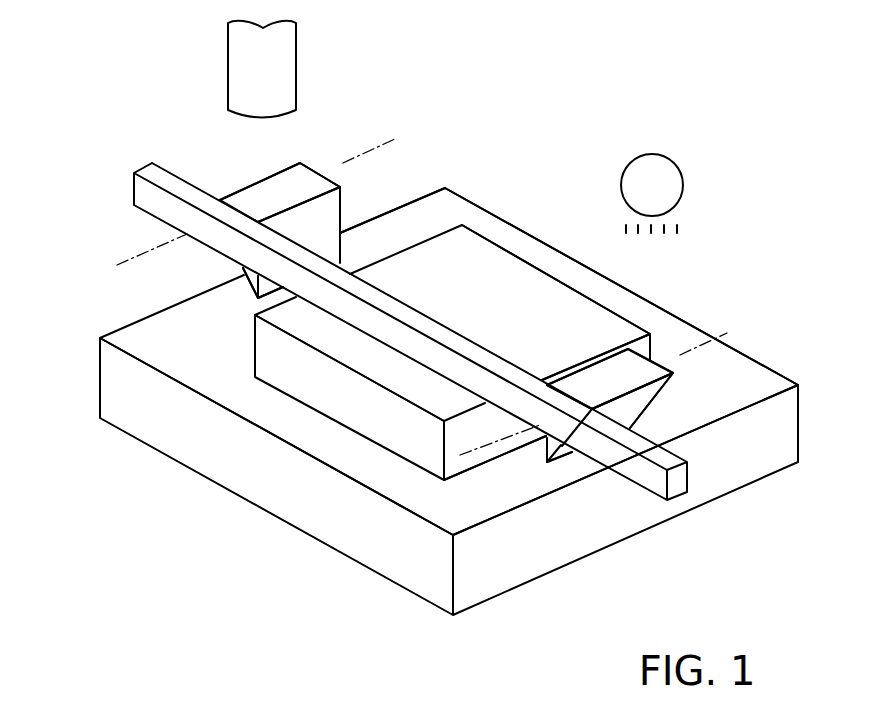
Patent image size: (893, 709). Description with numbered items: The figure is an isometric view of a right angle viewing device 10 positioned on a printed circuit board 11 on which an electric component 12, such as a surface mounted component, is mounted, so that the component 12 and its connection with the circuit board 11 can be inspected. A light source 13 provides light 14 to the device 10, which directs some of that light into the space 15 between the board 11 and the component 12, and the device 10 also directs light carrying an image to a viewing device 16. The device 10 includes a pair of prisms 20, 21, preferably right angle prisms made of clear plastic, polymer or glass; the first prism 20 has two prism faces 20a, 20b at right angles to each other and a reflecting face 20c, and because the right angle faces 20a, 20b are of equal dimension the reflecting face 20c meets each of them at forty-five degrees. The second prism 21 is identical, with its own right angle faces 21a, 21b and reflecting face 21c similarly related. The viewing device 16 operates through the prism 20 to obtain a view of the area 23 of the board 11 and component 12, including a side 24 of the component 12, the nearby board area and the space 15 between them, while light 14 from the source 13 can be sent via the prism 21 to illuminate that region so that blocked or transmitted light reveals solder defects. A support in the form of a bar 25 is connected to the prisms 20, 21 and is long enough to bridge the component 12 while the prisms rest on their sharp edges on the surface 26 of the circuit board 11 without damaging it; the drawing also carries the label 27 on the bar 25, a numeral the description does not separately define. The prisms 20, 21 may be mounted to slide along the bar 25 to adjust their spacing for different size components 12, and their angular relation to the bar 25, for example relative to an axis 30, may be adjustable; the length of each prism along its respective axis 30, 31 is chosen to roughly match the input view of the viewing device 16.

The right angle viewing device 10 is at (388, 166).
The printed circuit board 11 is at (447, 202).
The electric component 12 is at (467, 250).
The light source 13 is at (663, 182).
The light 14 is at (697, 229).
The space 15 is at (470, 486).
The viewing device 16 is at (300, 65).
The prism 20 is at (253, 183).
The prism face 20a is at (282, 177).
The prism face 20b is at (263, 287).
The reflecting face 20c is at (240, 273).
The prism 21 is at (635, 363).
The prism face 21a is at (648, 368).
The prism face 21b is at (550, 466).
The reflecting face 21c is at (638, 400).
The area 23 is at (208, 337).
The side of the component 24 is at (253, 337).
The bar 25 is at (337, 303).
The surface of the circuit board 26 is at (298, 430).
The bar workpiece 27 is at (235, 205).
The axis 30 is at (363, 150).
The axis 31 is at (735, 330).